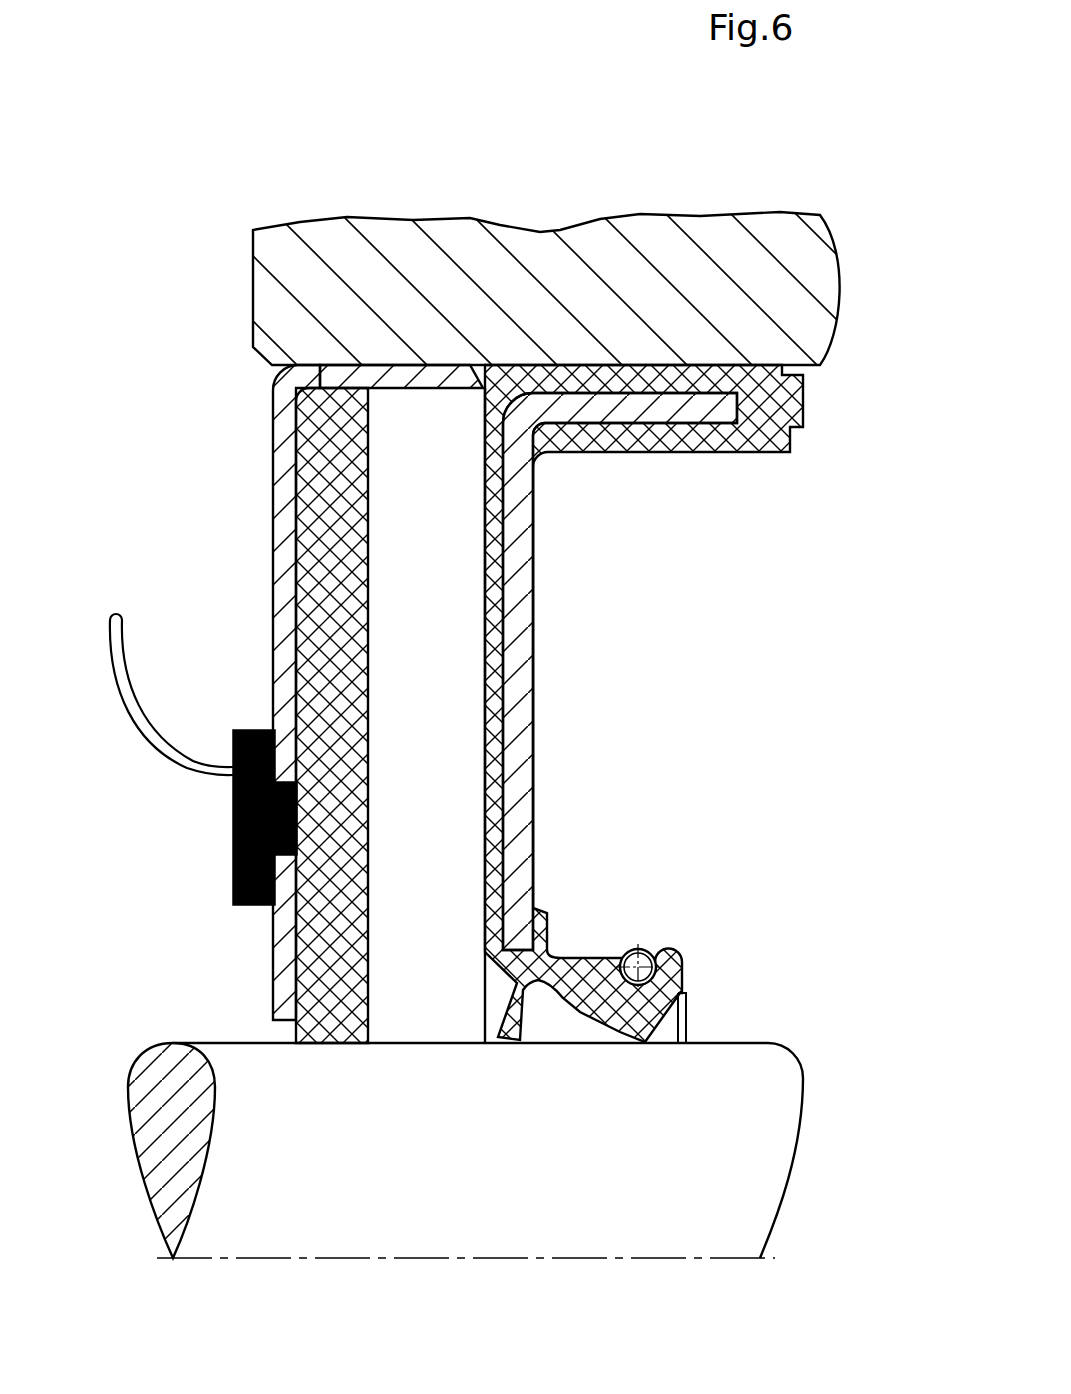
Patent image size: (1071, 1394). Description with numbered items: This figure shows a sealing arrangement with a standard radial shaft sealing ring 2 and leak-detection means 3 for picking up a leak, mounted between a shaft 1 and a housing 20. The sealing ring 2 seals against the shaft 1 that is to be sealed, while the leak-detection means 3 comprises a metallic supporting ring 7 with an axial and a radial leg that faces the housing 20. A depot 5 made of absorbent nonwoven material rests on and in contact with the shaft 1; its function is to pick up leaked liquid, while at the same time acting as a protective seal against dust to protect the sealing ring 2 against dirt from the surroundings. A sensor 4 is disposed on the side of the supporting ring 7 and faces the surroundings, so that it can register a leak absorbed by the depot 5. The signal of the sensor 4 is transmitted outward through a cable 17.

The shaft 1 is at (483, 1213).
The sealing ring 2 is at (563, 798).
The leak-detection means 3 is at (258, 425).
The sensor 4 is at (233, 837).
The depot 5 is at (323, 590).
The supporting ring 7 is at (370, 372).
The cable 17 is at (142, 730).
The housing 20 is at (519, 298).